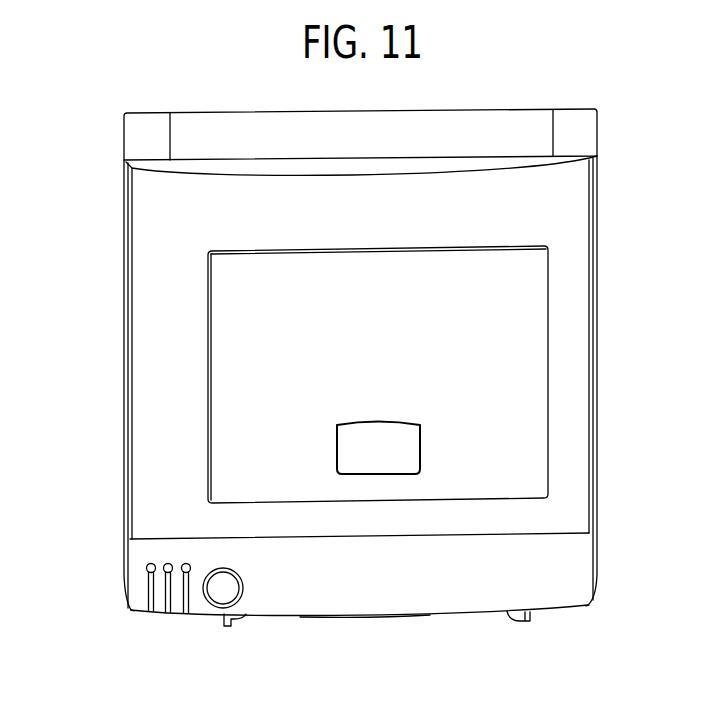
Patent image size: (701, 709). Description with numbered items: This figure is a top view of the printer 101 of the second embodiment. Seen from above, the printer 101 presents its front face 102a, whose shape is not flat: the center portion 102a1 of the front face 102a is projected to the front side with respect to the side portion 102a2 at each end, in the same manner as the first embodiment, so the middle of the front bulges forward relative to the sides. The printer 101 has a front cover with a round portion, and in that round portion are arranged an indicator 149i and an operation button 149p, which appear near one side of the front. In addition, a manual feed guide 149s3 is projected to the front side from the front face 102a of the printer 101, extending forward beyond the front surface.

The printer 101 is at (529, 104).
The front face 102a is at (404, 631).
The center portion 102a1 is at (367, 620).
The side portion 102a2 is at (139, 612).
The indicator 149i is at (147, 589).
The operation button 149p is at (215, 598).
The manual feed guide 149s3 is at (237, 626).